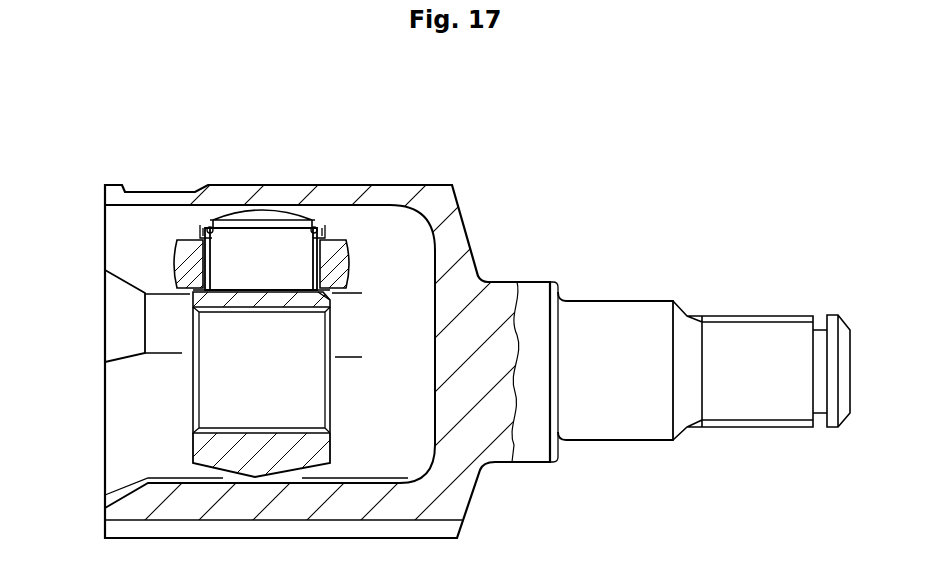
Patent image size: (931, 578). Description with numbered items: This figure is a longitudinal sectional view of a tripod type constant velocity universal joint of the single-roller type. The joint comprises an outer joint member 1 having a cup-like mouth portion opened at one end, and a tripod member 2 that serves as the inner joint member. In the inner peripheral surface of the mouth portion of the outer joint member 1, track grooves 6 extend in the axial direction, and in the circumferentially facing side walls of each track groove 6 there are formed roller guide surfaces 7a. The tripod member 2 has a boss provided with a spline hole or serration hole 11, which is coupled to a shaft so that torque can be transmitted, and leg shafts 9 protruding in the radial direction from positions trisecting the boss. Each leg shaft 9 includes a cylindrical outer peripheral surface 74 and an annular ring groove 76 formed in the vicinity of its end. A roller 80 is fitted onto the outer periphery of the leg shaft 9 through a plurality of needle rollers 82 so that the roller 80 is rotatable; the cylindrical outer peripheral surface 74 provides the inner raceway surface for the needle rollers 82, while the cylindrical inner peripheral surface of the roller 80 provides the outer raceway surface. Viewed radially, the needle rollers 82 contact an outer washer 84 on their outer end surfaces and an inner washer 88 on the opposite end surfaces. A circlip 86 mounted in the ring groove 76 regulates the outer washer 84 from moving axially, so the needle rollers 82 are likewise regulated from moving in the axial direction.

The outer joint member 1 is at (430, 184).
The tripod member 2 is at (290, 480).
The track groove 6 is at (385, 222).
The roller guide surface 7a is at (127, 262).
The leg shaft 9 is at (255, 212).
The spline hole or serration hole 11 is at (272, 431).
The cylindrical outer peripheral surface 74 is at (247, 277).
The annular ring groove 76 is at (283, 226).
The roller 80 is at (322, 240).
The needle rollers 82 is at (203, 244).
The outer washer 84 is at (200, 232).
The circlip 86 is at (210, 227).
The inner washer 88 is at (323, 307).